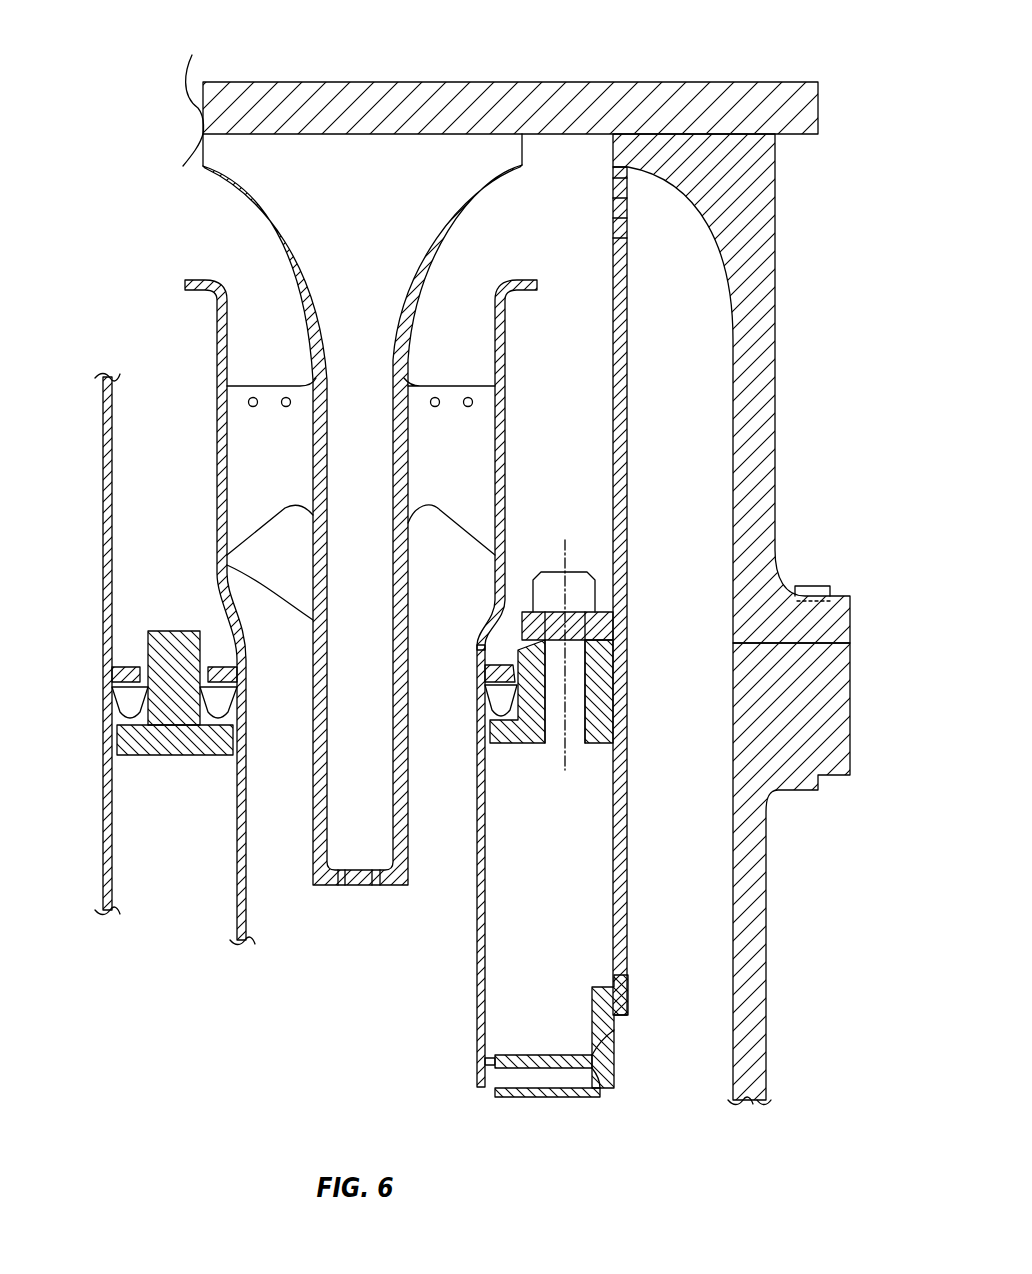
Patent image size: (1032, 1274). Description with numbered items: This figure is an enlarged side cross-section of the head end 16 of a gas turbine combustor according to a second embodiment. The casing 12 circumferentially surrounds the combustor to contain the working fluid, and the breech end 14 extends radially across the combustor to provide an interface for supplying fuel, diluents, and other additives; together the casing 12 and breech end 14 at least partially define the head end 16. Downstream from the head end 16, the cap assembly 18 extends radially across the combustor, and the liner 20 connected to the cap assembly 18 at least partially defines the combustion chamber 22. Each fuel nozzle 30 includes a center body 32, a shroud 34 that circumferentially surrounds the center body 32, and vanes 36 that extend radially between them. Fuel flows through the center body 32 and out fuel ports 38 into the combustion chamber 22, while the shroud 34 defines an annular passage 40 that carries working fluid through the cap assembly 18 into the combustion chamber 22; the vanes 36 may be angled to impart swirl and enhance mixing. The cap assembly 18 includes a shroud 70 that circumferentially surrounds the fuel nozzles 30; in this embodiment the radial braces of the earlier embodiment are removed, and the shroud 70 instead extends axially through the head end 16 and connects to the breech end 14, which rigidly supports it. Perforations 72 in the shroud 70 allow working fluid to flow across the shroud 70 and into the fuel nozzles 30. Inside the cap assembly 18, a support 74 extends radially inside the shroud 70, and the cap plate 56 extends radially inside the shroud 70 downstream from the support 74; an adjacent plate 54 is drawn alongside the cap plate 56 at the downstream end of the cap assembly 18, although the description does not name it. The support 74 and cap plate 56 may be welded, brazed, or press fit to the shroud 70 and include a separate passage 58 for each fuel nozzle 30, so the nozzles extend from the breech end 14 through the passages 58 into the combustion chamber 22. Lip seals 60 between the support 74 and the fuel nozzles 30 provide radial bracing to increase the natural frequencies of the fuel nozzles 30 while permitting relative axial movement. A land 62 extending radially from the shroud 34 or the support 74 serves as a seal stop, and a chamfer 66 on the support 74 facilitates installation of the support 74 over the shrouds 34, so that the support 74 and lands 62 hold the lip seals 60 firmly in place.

The casing 12 is at (775, 466).
The breech end 14 is at (727, 82).
The head end 16 is at (832, 527).
The cap assembly 18 is at (853, 1103).
The liner 20 is at (612, 1052).
The combustion chamber 22 is at (396, 1062).
The fuel nozzle 30 is at (452, 280).
The center body 32 is at (230, 574).
The shroud 34 is at (218, 342).
The vane 36 is at (268, 472).
The fuel port 38 is at (286, 407).
The annular passage 40 is at (268, 577).
The upper plate 54 is at (540, 1068).
The cap plate 56 is at (560, 1097).
The passage 58 is at (485, 1088).
The lip seal 60 is at (236, 706).
The land 62 is at (130, 666).
The chamfer 66 is at (150, 630).
The shroud 70 is at (628, 498).
The perforation 72 is at (620, 218).
The support 74 is at (165, 756).